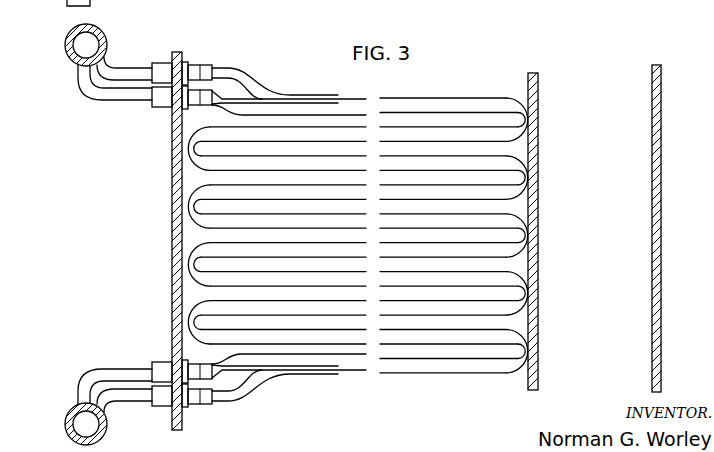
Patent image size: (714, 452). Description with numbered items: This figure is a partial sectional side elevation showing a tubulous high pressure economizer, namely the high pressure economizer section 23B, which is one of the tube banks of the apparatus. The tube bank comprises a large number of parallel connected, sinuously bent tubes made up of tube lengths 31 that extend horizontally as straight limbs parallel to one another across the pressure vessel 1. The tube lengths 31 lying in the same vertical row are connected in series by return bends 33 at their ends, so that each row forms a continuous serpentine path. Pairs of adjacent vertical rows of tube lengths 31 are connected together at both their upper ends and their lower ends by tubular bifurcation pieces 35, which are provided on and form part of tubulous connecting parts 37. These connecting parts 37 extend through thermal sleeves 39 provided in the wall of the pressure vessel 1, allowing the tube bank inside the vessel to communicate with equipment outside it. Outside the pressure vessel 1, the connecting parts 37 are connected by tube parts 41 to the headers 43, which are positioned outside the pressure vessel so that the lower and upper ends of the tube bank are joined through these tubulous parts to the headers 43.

The pressure vessel 1 is at (656, 198).
The high pressure economizer section 23B is at (469, 98).
The tube lengths 31 is at (336, 127).
The return bends 33 is at (529, 177).
The tubular bifurcation pieces 35 is at (216, 85).
The tubulous connecting parts 37 is at (203, 75).
The thermal sleeves 39 is at (161, 78).
The tube parts 41 is at (115, 72).
The headers 43 is at (66, 37).